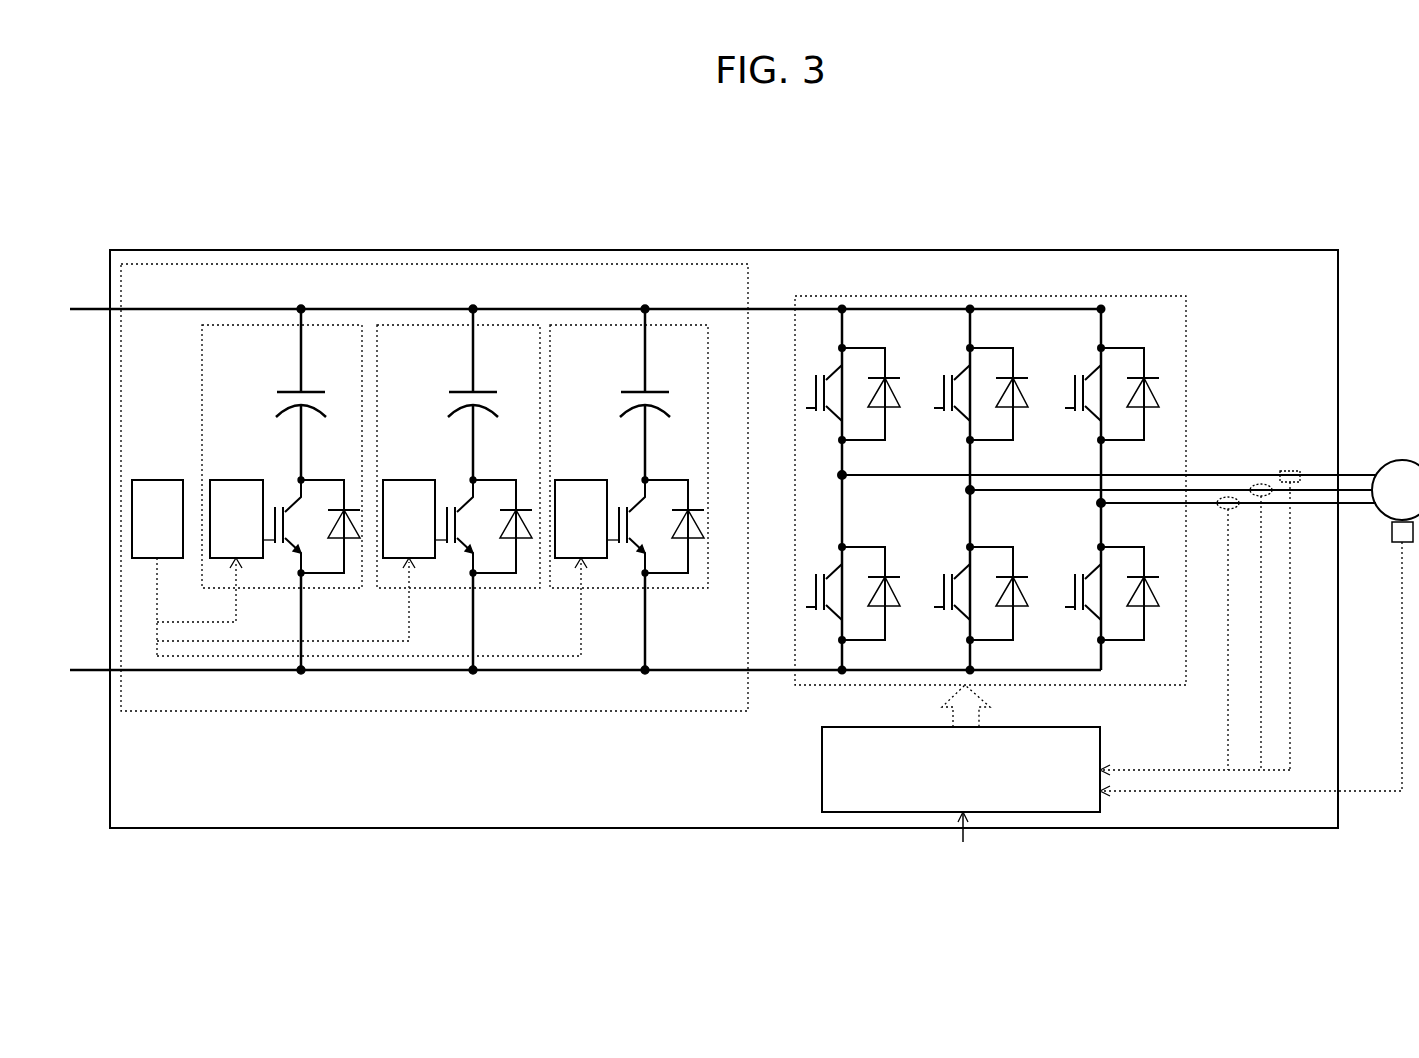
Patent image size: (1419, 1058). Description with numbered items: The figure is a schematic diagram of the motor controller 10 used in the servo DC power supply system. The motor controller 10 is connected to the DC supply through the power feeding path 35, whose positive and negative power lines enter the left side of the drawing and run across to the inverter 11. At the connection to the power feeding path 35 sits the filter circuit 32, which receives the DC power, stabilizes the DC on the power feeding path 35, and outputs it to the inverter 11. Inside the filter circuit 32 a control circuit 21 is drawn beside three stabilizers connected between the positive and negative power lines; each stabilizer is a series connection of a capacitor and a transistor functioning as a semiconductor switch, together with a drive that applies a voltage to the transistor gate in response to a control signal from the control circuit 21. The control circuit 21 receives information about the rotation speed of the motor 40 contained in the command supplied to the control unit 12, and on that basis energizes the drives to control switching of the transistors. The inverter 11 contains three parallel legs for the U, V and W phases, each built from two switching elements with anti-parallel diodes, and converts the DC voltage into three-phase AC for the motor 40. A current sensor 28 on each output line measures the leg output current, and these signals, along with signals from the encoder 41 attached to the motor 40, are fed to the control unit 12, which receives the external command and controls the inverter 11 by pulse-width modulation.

The motor controller 10 is at (1340, 285).
The inverter 11 is at (1188, 345).
The control unit 12 is at (1090, 727).
The control circuit 21 is at (158, 478).
The current sensor 28 is at (1290, 470).
The filter circuit 32 is at (562, 713).
The power feeding path 35 is at (85, 305).
The motor 40 is at (1400, 460).
The encoder 41 is at (1393, 544).